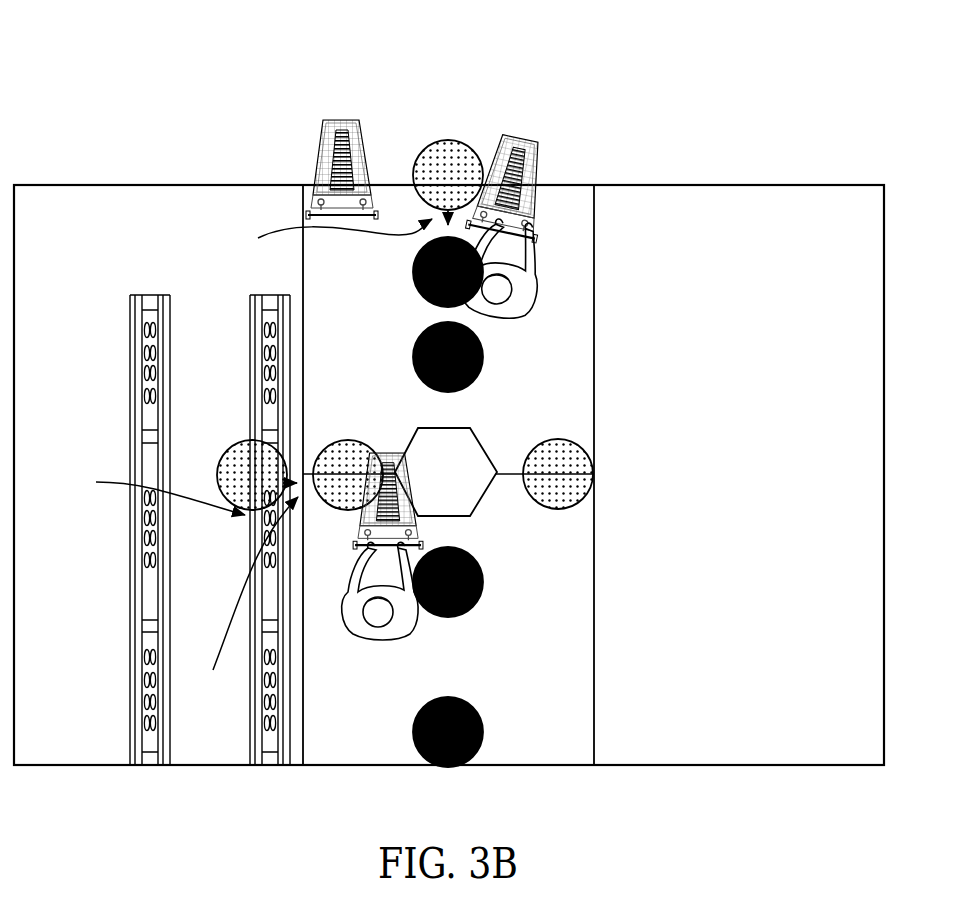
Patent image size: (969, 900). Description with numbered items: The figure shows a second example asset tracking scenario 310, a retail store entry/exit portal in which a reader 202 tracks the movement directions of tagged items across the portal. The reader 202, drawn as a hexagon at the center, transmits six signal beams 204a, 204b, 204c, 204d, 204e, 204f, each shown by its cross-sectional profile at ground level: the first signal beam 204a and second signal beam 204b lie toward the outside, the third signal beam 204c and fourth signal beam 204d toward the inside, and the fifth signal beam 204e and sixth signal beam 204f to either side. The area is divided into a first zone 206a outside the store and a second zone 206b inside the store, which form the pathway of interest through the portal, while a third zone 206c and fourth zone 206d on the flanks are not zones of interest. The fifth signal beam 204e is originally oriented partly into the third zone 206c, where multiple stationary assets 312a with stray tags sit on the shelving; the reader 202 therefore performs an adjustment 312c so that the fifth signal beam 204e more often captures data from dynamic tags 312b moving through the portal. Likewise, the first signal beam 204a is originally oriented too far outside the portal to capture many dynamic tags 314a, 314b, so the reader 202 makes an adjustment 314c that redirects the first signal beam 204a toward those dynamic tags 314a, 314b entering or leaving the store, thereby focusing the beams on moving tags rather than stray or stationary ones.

The second example asset tracking scenario 310 is at (90, 40).
The reader 202 is at (482, 497).
The first signal beam 204a is at (447, 140).
The second signal beam 204b is at (483, 358).
The third signal beam 204c is at (450, 618).
The fourth signal beam 204d is at (483, 730).
The fifth signal beam 204e is at (350, 440).
The sixth signal beam 204f is at (559, 438).
The first zone 206a is at (389, 335).
The second zone 206b is at (389, 717).
The third zone 206c is at (102, 433).
The fourth zone 206d is at (769, 508).
The stationary assets 312a is at (137, 492).
The dynamic tags 312b is at (412, 514).
The adjustment 312c is at (237, 602).
The dynamic tag 314a is at (330, 144).
The dynamic tag 314b is at (531, 154).
The adjustment 314c is at (312, 239).